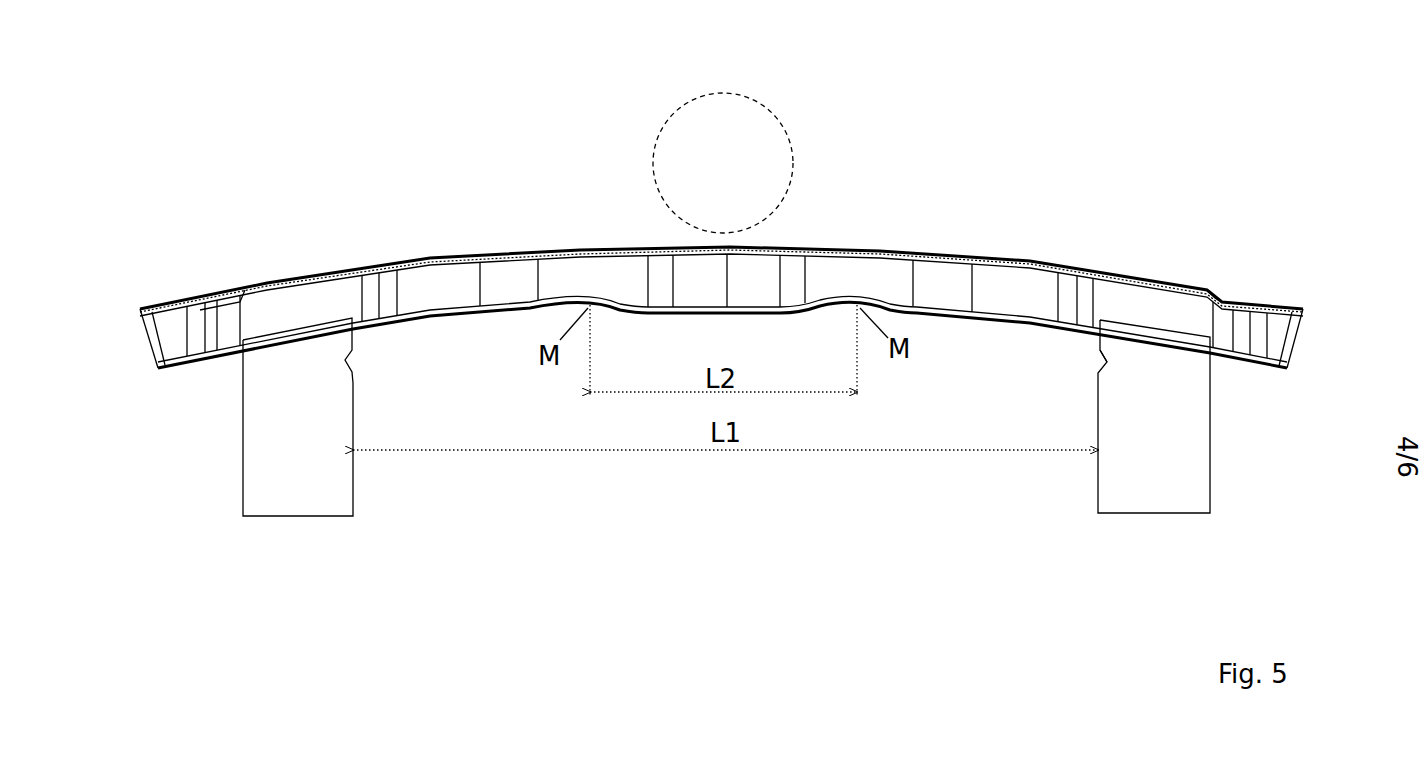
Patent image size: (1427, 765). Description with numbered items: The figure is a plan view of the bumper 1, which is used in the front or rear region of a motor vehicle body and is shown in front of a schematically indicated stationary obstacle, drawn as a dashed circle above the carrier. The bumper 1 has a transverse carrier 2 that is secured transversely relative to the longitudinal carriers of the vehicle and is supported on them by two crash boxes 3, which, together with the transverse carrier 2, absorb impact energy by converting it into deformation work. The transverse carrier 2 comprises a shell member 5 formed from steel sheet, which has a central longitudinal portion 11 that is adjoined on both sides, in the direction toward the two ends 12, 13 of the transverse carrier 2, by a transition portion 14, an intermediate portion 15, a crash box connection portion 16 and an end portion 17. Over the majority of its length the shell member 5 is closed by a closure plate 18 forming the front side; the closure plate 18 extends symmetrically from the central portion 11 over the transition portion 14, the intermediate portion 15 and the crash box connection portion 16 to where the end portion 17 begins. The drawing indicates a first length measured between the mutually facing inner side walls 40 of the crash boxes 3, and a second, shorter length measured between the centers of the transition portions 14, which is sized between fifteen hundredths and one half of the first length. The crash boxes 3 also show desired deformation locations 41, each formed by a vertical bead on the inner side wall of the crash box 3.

The bumper 1 is at (1138, 74).
The transverse carrier 2 is at (945, 243).
The crash boxes 3 is at (255, 478).
The shell member 5 is at (500, 324).
The central longitudinal portion 11 is at (797, 222).
The end 12 is at (1340, 318).
The end 13 is at (140, 344).
The transition portion 14 is at (858, 247).
The intermediate portion 15 is at (1016, 250).
The crash box connection portion 16 is at (1152, 280).
The end portion 17 is at (1262, 300).
The closure plate 18 is at (508, 254).
The inner side walls 40 is at (355, 505).
The desired deformation locations 41 is at (1103, 362).